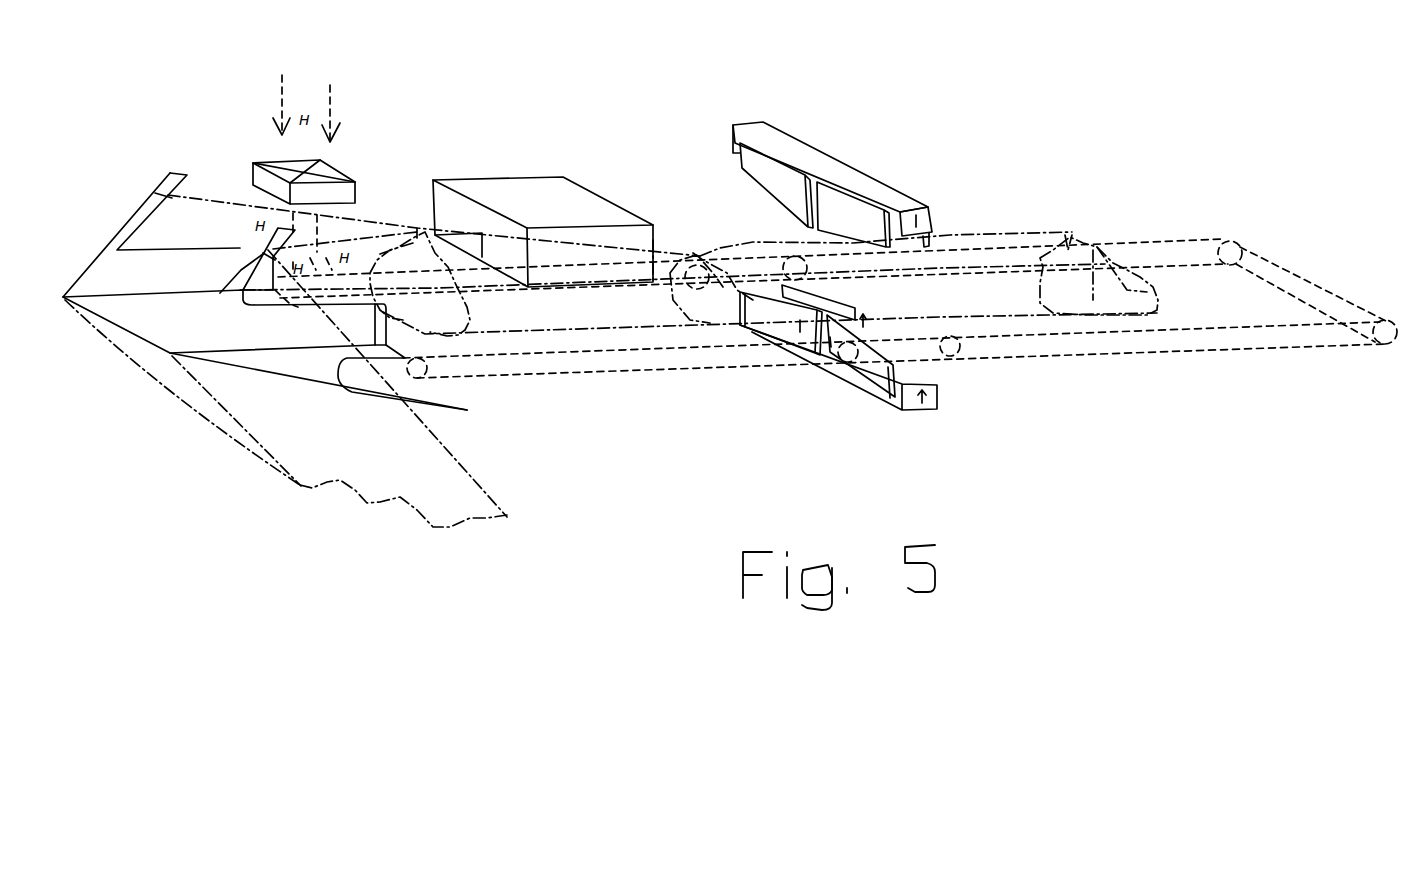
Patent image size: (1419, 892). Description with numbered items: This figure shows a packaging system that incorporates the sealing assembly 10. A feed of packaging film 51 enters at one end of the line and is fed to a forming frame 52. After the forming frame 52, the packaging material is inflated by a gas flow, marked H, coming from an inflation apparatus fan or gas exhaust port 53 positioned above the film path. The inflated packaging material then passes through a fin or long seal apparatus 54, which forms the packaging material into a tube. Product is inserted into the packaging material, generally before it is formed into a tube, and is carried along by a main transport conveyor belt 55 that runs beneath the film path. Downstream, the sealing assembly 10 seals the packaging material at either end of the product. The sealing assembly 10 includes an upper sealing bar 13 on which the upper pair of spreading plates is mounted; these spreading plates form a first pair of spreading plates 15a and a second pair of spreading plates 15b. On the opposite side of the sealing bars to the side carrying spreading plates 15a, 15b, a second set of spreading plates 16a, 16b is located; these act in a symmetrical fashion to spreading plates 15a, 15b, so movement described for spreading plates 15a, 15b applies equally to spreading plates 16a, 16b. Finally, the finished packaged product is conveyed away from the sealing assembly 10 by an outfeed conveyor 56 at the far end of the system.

The sealing assembly 10 is at (802, 258).
The upper sealing bar 13 is at (742, 124).
The first pair of spreading plates 15a is at (740, 168).
The second pair of spreading plates 15b is at (868, 200).
The spreading plate of second set 16a is at (788, 291).
The spreading plate of second set 16b is at (929, 247).
The packaging film 51 is at (207, 430).
The forming frame 52 is at (176, 170).
The inflation apparatus fan or gas exhaust port 53 is at (342, 167).
The fin or long seal apparatus 54 is at (532, 167).
The main transport conveyor belt 55 is at (674, 378).
The outfeed conveyor 56 is at (1218, 348).